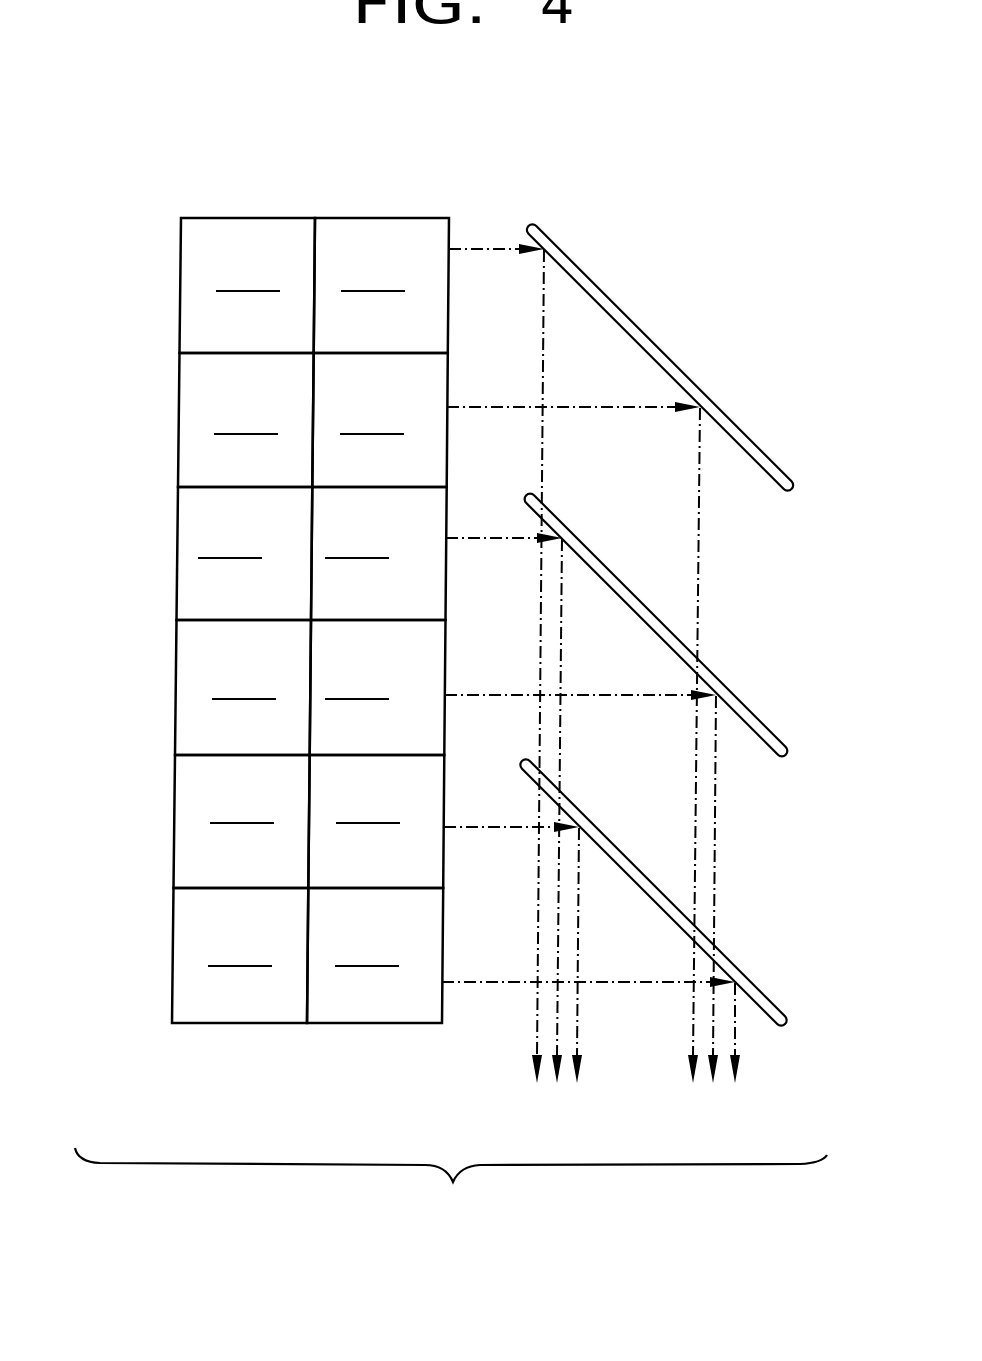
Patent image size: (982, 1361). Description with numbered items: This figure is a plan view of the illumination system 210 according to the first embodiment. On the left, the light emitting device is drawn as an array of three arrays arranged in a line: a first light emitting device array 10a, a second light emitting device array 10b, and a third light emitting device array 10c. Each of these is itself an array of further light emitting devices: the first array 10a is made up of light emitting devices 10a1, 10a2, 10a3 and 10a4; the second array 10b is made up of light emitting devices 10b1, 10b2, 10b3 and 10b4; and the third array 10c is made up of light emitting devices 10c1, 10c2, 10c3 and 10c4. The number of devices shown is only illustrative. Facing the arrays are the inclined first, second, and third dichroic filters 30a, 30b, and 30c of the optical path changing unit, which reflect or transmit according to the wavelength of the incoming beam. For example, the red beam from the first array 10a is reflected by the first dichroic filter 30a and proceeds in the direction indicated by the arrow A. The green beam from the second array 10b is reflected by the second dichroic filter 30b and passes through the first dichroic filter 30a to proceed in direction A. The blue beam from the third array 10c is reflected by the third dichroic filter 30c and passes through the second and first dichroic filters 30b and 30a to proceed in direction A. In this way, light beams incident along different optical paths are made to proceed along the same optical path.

The first light emitting device array 10a is at (248, 889).
The second light emitting device array 10b is at (251, 621).
The third light emitting device array 10c is at (253, 352).
The light emitting device 10a1 is at (240, 955).
The light emitting device 10a2 is at (242, 821).
The light emitting device 10a3 is at (375, 955).
The light emitting device 10a4 is at (376, 821).
The light emitting device 10b1 is at (243, 687).
The light emitting device 10b2 is at (245, 553).
The light emitting device 10b3 is at (378, 687).
The light emitting device 10b4 is at (379, 553).
The light emitting device 10c1 is at (246, 420).
The light emitting device 10c2 is at (248, 285).
The light emitting device 10c3 is at (380, 420).
The light emitting device 10c4 is at (381, 285).
The first dichroic filter 30a is at (597, 837).
The second dichroic filter 30b is at (608, 572).
The third dichroic filter 30c is at (667, 357).
The arrow A is at (636, 693).
The illumination system 210 is at (451, 1191).